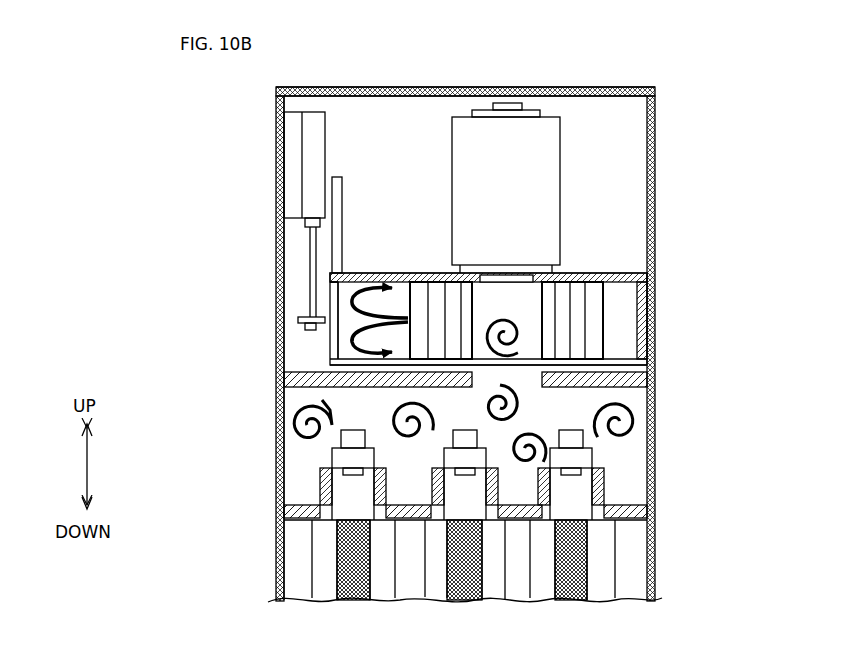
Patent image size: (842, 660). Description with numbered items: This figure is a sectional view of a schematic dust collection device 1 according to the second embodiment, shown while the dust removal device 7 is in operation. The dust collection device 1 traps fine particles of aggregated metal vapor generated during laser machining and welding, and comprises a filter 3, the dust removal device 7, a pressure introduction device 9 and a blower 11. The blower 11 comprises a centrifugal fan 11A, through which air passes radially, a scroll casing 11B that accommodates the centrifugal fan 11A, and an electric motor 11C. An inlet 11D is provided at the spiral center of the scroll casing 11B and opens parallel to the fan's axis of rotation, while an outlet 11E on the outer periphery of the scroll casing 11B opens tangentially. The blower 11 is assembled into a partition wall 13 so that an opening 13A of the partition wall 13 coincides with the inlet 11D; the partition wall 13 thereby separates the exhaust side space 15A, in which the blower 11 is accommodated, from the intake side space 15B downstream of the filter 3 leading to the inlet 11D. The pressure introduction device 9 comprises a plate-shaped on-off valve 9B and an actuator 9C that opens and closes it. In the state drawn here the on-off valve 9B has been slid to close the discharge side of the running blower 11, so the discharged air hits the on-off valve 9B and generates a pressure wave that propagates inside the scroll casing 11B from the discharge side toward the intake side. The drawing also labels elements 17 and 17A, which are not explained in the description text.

The dust collection device 1 is at (220, 203).
The filter 3 is at (308, 553).
The dust removal device 7 is at (328, 457).
The pressure introduction device 9 is at (320, 358).
The on-off valve 9B is at (325, 345).
The actuator 9C is at (310, 157).
The blower 11 is at (583, 257).
The centrifugal fan 11A is at (603, 318).
The scroll casing 11B is at (625, 273).
The electric motor 11C is at (562, 188).
The inlet 11D is at (650, 380).
The outlet 11E is at (388, 288).
The partition wall 13 is at (620, 372).
The opening 13A is at (510, 372).
The exhaust side space 15A is at (385, 105).
The intake side space 15B is at (380, 415).
The housing 17 is at (655, 113).
The housing top surface 17A is at (443, 87).